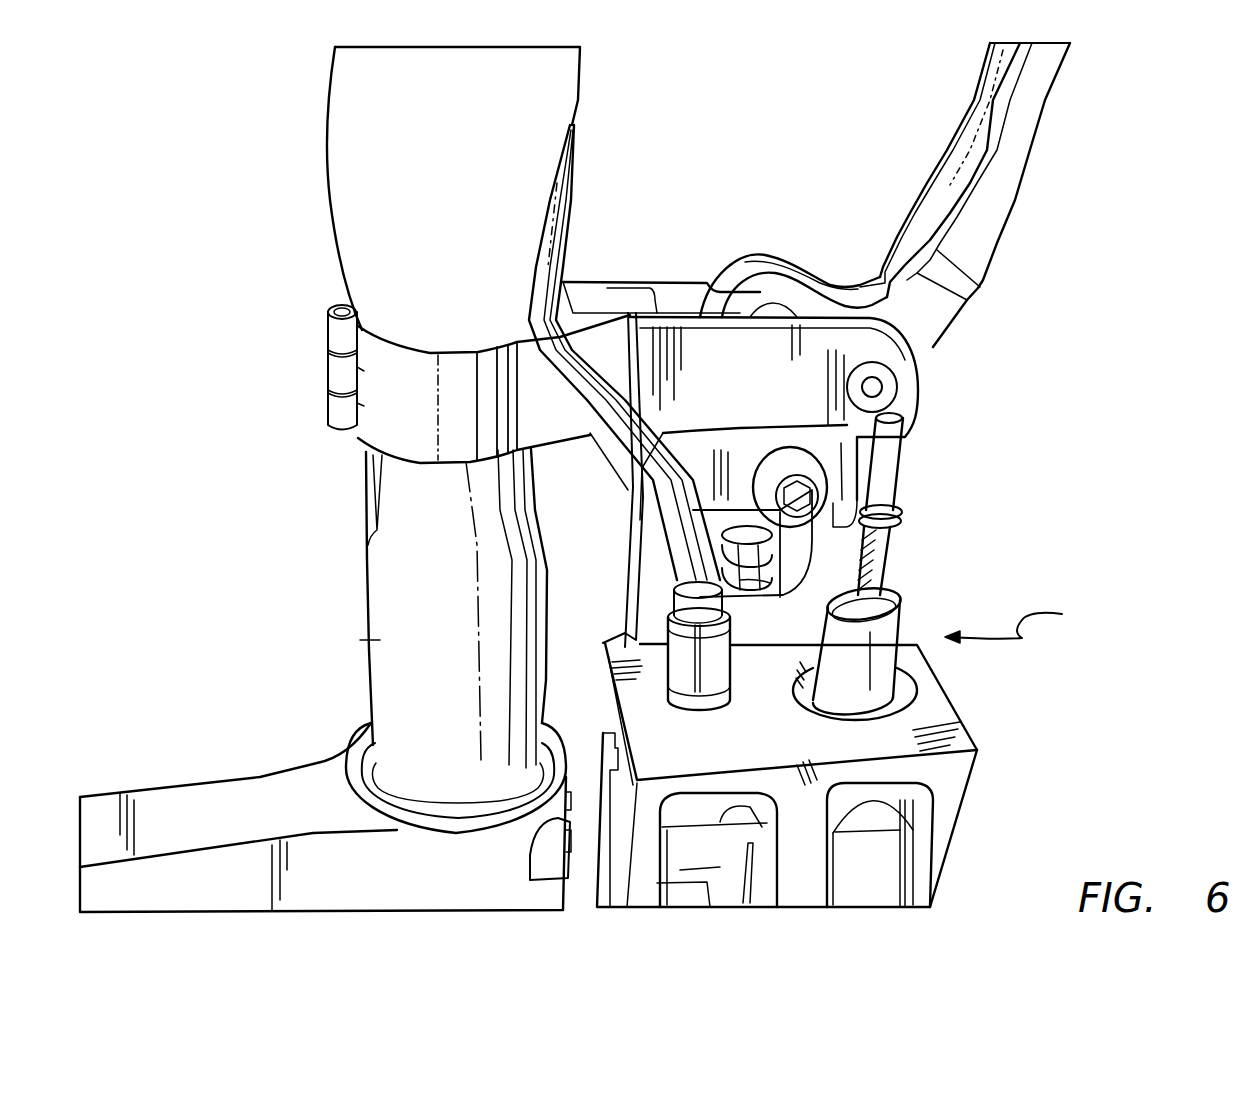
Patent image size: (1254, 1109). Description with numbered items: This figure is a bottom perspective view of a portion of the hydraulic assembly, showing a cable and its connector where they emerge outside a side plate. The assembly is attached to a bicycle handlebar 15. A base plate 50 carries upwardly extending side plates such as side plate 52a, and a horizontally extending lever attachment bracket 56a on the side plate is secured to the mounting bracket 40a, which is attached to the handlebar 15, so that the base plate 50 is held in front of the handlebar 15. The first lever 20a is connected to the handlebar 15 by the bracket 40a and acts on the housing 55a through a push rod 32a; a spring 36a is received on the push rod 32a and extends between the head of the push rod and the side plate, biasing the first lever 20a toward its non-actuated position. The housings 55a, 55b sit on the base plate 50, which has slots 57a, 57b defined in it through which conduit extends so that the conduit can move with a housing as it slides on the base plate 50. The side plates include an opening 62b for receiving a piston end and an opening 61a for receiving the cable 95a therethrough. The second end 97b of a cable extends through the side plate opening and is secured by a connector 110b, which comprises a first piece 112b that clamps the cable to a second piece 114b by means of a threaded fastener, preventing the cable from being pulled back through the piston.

The bicycle handlebar 15 is at (372, 638).
The first lever 20a is at (1022, 137).
The push rod 32a is at (742, 580).
The spring 36a is at (725, 555).
The mounting bracket 40a is at (425, 414).
The base plate 50 is at (942, 837).
The side plate 52a is at (920, 688).
The housing 55a is at (680, 855).
The housing 55b is at (863, 867).
The lever attachment bracket 56a is at (890, 512).
The slot 57a is at (748, 795).
The slot 57b is at (927, 783).
The opening 61a is at (683, 705).
The opening 62b is at (912, 693).
The cable 95a is at (572, 178).
The second end of cable 97b is at (880, 548).
The connector 110b is at (1034, 622).
The first piece 112b is at (893, 602).
The second piece 114b is at (967, 753).